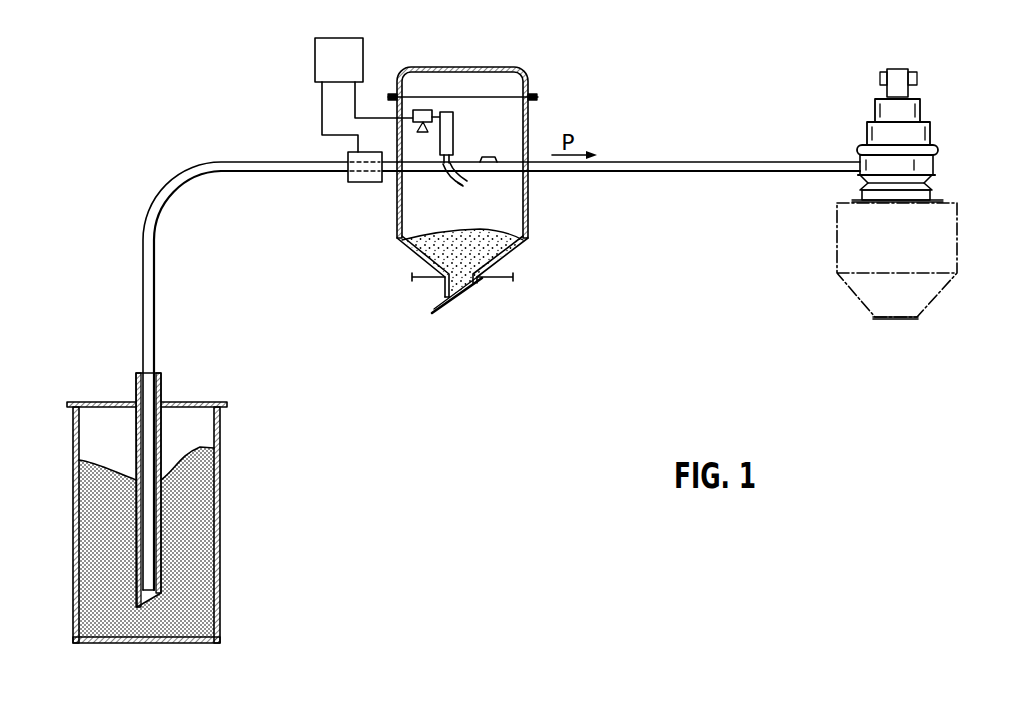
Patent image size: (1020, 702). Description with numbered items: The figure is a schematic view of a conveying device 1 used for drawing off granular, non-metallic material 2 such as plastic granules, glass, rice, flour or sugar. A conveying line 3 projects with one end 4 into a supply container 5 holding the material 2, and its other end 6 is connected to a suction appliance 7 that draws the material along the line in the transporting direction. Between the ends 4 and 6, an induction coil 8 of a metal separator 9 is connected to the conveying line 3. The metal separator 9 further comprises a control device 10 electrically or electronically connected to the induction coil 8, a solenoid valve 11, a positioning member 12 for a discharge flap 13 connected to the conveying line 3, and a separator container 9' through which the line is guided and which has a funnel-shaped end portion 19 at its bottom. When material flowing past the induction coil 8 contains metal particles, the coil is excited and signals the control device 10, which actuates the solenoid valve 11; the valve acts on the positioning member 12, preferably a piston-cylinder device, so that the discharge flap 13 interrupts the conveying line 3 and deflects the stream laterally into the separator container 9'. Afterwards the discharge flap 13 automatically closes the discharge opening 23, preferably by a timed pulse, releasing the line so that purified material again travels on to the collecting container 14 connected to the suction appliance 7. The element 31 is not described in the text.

The conveying device 1 is at (705, 90).
The granular material to be transported 2 is at (185, 540).
The conveying line 3 is at (157, 293).
The end of conveying line 4 is at (148, 431).
The supply container 5 is at (220, 488).
The other end of conveying line 6 is at (820, 167).
The suction appliance 7 is at (950, 144).
The induction coil 8 is at (367, 177).
The metal separator 9 is at (463, 124).
The separator container 9' is at (477, 55).
The control device 10 is at (338, 50).
The solenoid valve 11 is at (423, 110).
The positioning member 12 is at (447, 112).
The discharge flap 13 is at (467, 175).
The collecting container 14 is at (957, 243).
The funnel-shaped end portion 19 is at (513, 252).
The discharge opening 23 is at (462, 185).
The sensor 31 is at (490, 156).